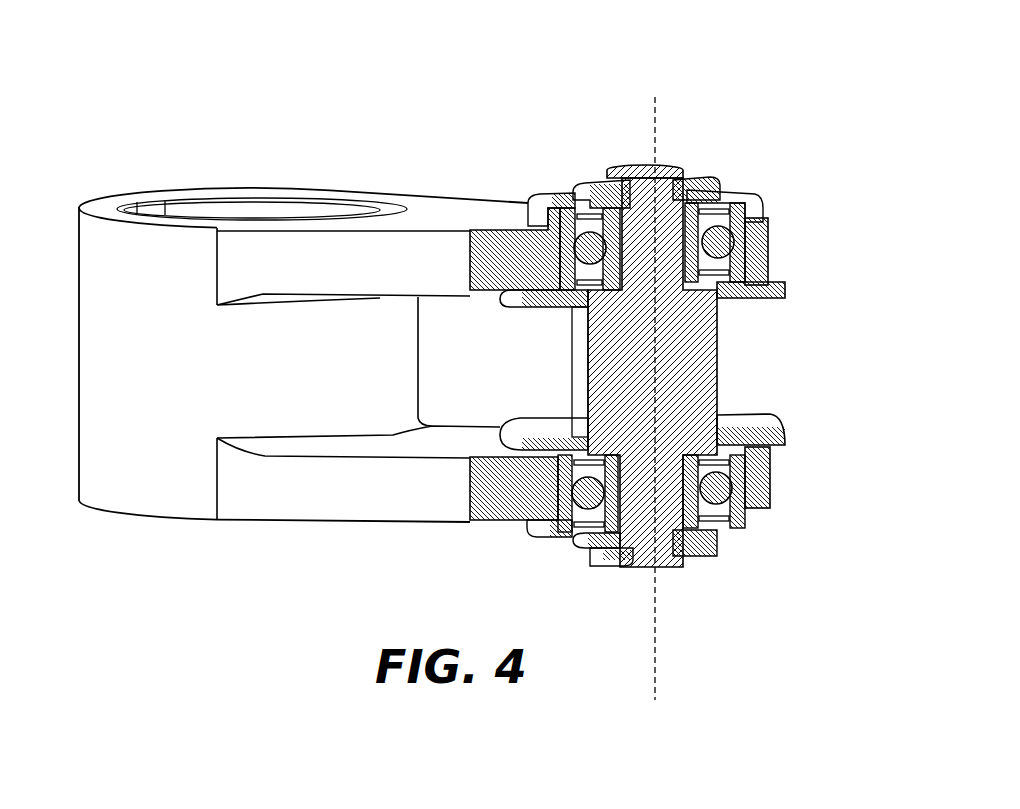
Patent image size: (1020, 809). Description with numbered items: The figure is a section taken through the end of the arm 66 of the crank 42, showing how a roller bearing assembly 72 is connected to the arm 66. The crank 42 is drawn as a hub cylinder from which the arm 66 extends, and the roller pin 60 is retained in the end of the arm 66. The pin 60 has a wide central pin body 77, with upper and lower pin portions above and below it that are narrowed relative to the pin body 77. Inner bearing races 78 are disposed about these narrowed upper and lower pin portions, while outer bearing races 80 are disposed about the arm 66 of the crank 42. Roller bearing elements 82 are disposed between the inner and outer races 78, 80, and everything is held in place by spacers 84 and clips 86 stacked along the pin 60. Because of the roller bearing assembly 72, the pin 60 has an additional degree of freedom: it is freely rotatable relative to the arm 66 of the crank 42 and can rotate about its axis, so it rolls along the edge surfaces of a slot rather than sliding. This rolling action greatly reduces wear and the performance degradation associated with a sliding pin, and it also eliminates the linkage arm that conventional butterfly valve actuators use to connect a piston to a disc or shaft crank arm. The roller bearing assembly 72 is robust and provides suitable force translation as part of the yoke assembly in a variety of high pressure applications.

The crank 42 is at (58, 250).
The arm 66 is at (455, 215).
The roller bearing assembly 72 is at (812, 125).
The roller pin 60 is at (643, 167).
The pin body 77 is at (697, 394).
The spacer 84 is at (607, 187).
The clip 86 is at (707, 183).
The inner bearing race 78 is at (620, 505).
The outer bearing race 80 is at (533, 530).
The roller bearing element 82 is at (722, 247).